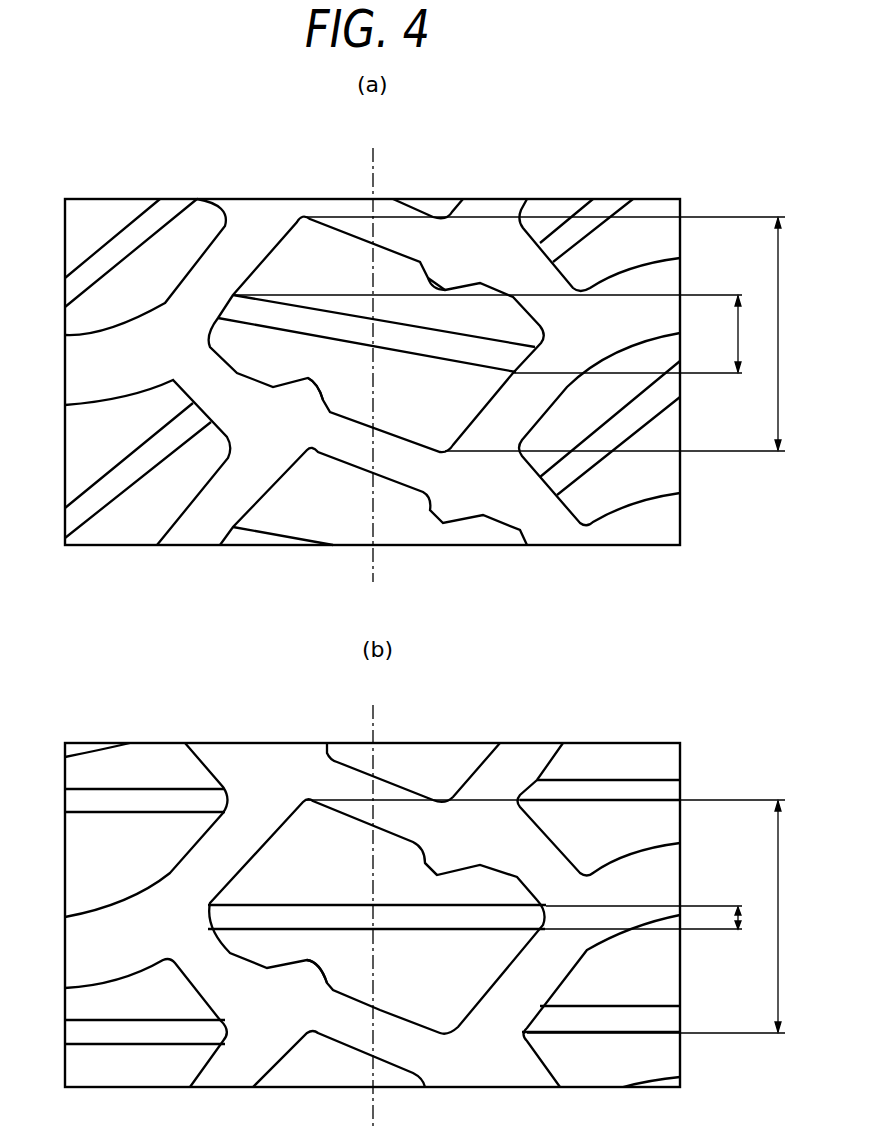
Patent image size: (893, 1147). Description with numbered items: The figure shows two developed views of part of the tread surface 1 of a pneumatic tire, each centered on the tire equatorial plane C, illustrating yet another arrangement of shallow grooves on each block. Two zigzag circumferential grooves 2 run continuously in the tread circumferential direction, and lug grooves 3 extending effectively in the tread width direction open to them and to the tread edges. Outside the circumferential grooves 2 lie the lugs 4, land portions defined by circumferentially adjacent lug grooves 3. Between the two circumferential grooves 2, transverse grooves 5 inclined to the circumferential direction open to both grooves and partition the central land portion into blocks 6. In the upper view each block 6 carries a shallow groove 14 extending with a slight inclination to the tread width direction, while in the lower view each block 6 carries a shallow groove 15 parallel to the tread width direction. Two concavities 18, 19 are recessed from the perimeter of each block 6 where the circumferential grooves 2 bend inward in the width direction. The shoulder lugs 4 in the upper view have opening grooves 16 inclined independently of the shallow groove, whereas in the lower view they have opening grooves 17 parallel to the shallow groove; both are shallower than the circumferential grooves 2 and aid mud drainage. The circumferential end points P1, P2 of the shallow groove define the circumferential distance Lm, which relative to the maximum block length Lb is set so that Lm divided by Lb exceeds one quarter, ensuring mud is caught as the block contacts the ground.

The tread surface 1 is at (562, 159).
The circumferential groove 2 is at (203, 523).
The lug groove 3 is at (85, 368).
The lug 4 is at (142, 294).
The transverse groove 5 is at (397, 231).
The block 6 is at (342, 274).
The shallow groove 14 is at (447, 347).
The shallow groove 15 is at (427, 920).
The opening groove 16 is at (160, 210).
The opening groove 17 is at (85, 799).
The concavity 18 is at (437, 283).
The concavity 19 is at (310, 387).
The circumferential end point P1 is at (233, 292).
The circumferential end point P2 is at (516, 377).
The circumferential distance Lm is at (500, 613).
The maximum length of the block Lb is at (556, 625).
The tire equatorial plane C is at (372, 626).